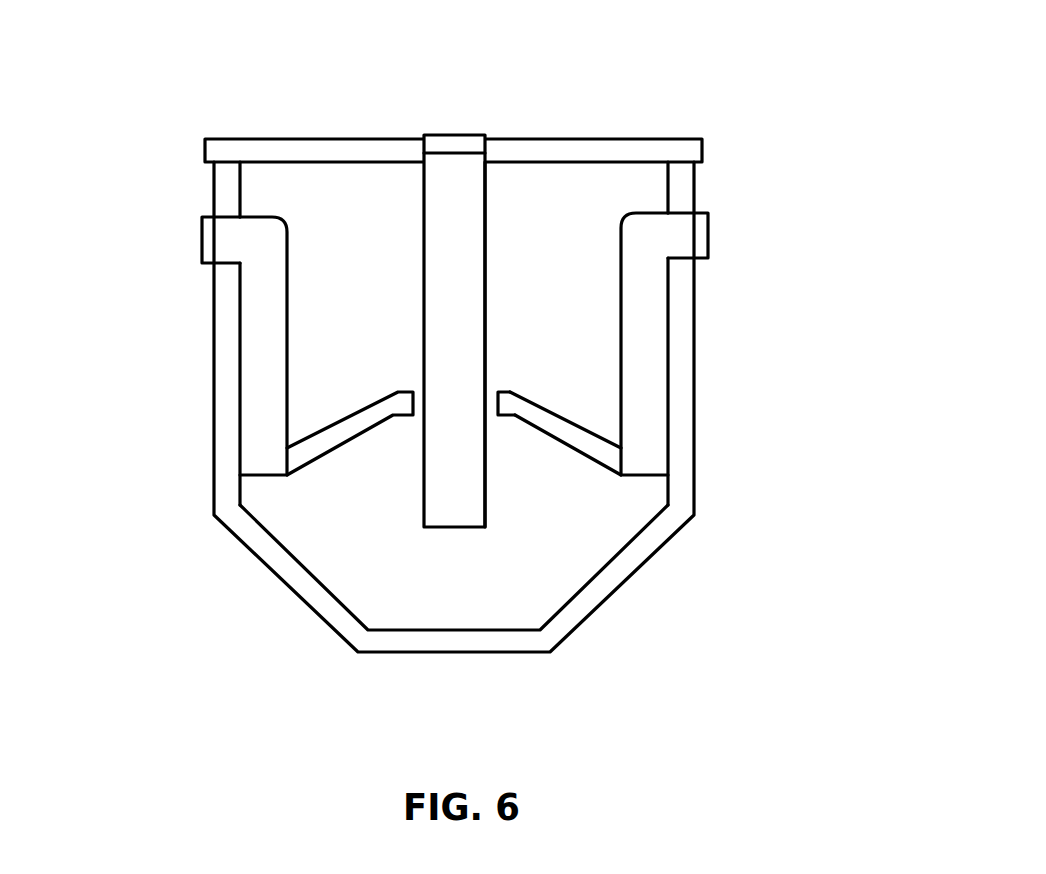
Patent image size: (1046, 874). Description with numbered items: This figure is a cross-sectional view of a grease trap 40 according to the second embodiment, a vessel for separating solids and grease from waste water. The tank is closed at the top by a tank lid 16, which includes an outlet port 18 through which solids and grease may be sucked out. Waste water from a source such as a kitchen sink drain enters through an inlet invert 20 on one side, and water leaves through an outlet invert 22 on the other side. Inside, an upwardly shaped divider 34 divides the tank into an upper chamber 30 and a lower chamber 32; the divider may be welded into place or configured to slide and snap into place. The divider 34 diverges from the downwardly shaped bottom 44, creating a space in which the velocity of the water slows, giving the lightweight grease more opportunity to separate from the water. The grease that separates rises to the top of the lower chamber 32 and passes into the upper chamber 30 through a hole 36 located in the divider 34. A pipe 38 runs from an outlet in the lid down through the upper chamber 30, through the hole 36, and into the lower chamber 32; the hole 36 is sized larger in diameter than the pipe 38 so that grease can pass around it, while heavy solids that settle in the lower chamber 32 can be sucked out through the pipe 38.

The retaining assembly 40 is at (84, 162).
The tank lid 16 is at (292, 139).
The outlet port 18 is at (443, 142).
The pipe 38 is at (487, 210).
The upper chamber 30 is at (585, 208).
The hole 36 is at (490, 395).
The outlet invert 22 is at (257, 372).
The inlet invert 20 is at (655, 400).
The upwardly shaped divider 34 is at (602, 453).
The downwardly shaped bottom 44 is at (347, 610).
The lower chamber 32 is at (555, 570).